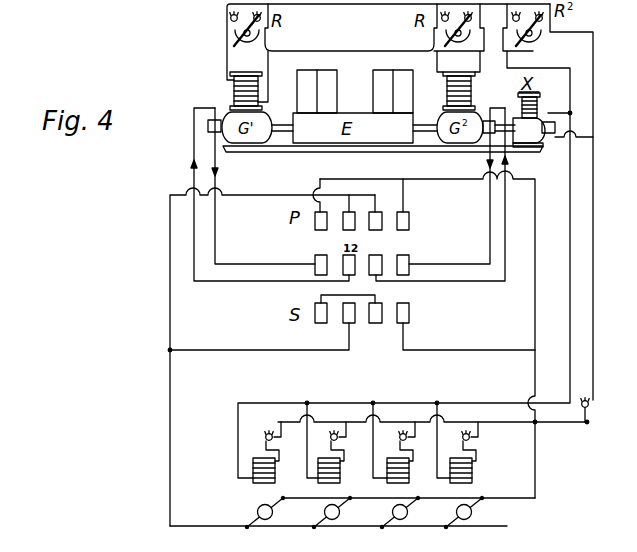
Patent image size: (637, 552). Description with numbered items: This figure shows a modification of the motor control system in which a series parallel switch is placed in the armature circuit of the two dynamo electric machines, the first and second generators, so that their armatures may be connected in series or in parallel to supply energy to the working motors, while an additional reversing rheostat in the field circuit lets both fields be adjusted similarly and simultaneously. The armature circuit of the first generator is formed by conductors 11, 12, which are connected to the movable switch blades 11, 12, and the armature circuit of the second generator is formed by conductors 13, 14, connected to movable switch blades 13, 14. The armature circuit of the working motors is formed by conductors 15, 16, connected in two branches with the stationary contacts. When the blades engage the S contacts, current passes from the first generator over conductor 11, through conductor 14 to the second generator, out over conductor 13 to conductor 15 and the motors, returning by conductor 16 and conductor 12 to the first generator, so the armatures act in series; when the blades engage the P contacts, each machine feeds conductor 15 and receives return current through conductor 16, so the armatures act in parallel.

The conductor 11 is at (217, 178).
The conductor 12 is at (194, 153).
The conductor 13 is at (490, 207).
The conductor 14 is at (505, 243).
The conductor 15 is at (535, 324).
The conductor 16 is at (170, 329).